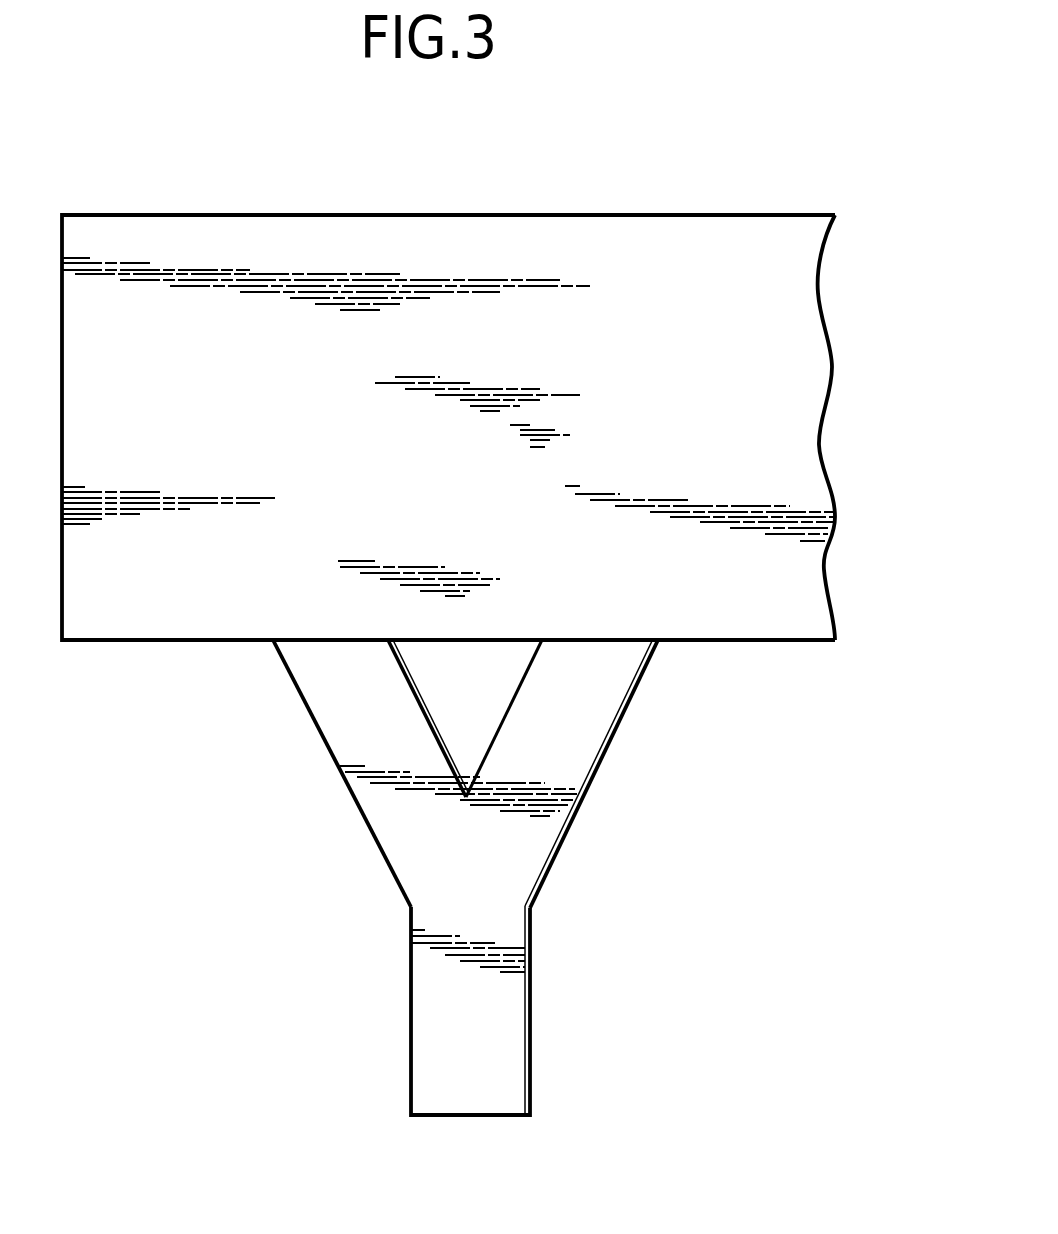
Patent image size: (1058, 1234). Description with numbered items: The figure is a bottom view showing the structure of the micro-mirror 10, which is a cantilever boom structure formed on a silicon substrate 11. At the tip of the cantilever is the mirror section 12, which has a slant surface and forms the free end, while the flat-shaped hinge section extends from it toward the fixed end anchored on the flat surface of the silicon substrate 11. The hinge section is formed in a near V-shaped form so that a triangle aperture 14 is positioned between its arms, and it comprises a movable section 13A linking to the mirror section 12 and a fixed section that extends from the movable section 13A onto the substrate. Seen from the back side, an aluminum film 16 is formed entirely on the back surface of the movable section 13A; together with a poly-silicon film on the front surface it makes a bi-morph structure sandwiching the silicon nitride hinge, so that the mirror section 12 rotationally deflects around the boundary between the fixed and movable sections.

The silicon substrate 11 is at (477, 237).
The micro-mirror 10 is at (614, 764).
The movable section 13A is at (657, 682).
The triangle aperture 14 is at (444, 690).
The mirror section 12 is at (547, 1003).
The aluminum film 16 is at (518, 953).